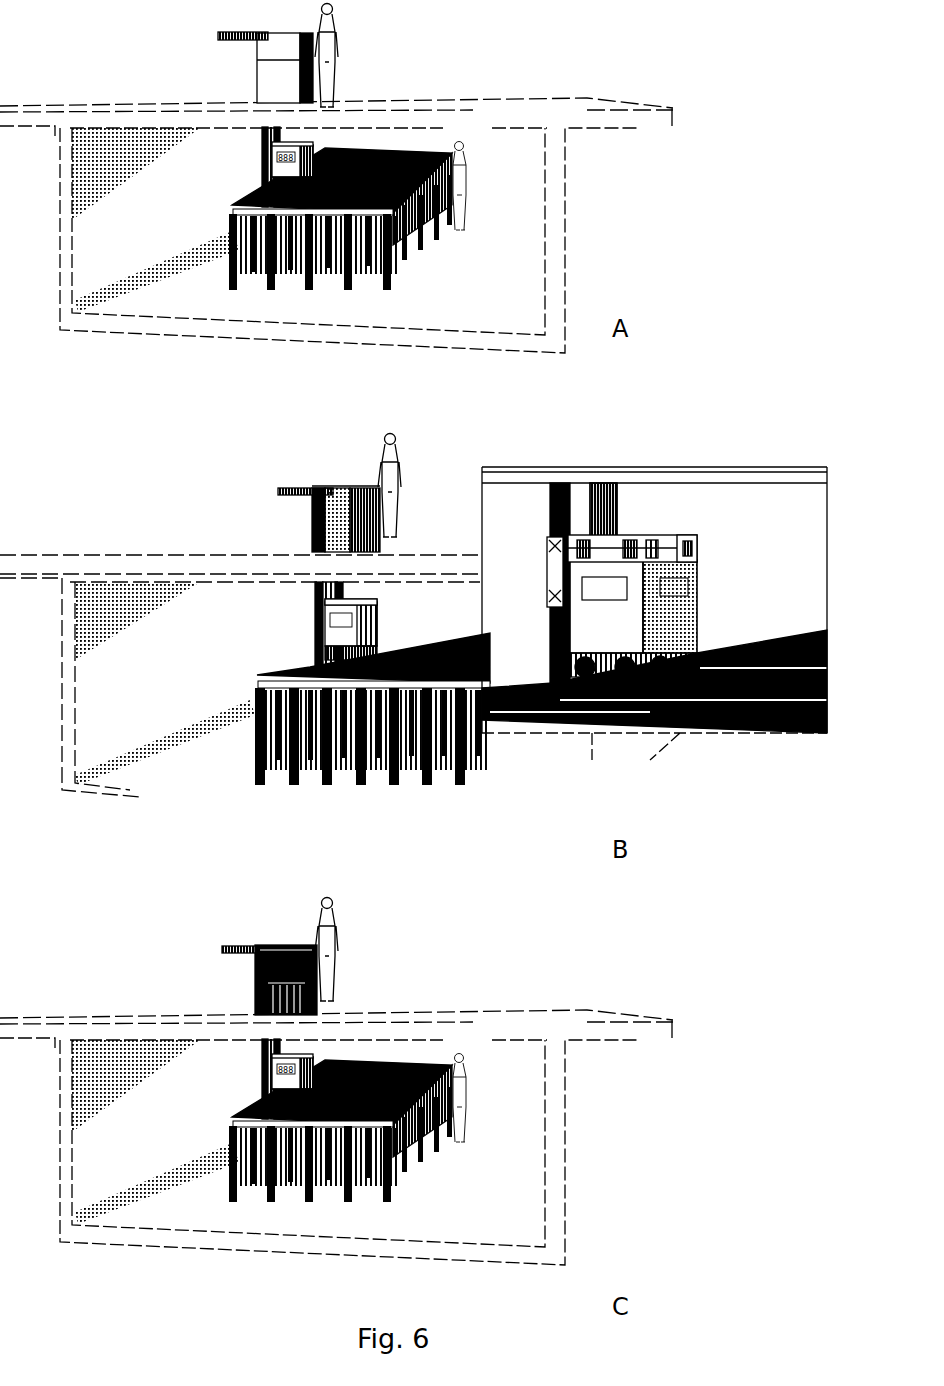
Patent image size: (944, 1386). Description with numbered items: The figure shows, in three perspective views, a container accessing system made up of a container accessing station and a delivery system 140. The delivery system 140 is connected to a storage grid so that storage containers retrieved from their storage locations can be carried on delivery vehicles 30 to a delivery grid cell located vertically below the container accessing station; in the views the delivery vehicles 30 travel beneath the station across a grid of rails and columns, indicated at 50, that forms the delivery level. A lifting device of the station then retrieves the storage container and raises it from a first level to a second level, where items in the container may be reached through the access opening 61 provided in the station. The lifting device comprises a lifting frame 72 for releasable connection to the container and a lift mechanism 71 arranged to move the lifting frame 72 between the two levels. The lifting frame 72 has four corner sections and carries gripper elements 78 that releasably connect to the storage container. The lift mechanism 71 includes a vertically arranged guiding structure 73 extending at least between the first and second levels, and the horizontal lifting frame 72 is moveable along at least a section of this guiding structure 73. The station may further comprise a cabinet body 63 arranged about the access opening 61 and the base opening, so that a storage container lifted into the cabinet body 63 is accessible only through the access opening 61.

The delivery vehicle 30 is at (270, 195).
The storage grid / rack structure 50 is at (390, 208).
The access opening 61 is at (353, 488).
The cabinet body 63 is at (267, 48).
The lift mechanism 71 is at (583, 523).
The lifting frame 72 is at (618, 537).
The guiding structure 73 is at (263, 155).
The gripper element 78 is at (682, 547).
The delivery system 140 is at (211, 258).